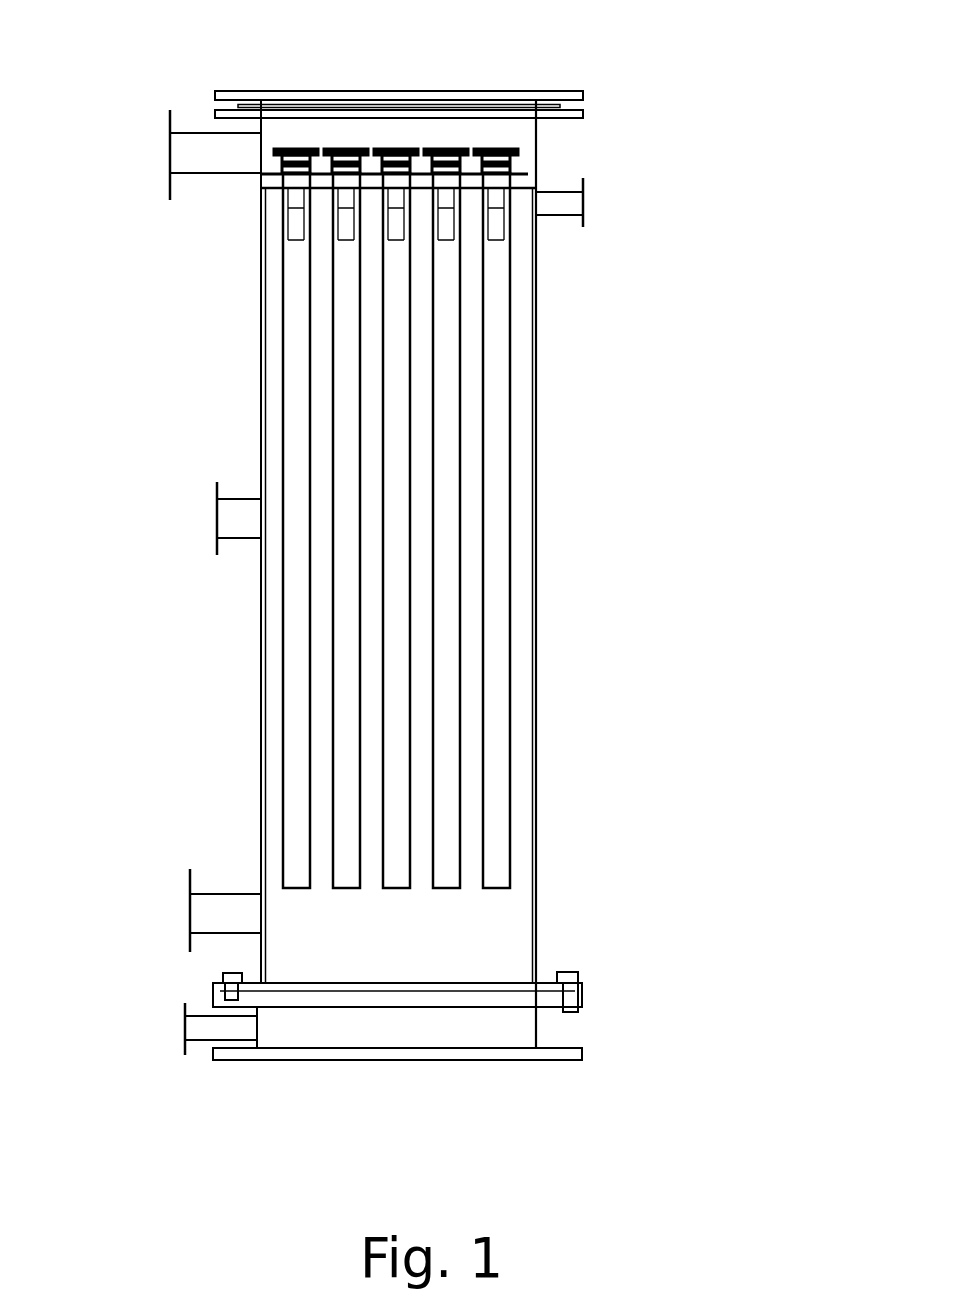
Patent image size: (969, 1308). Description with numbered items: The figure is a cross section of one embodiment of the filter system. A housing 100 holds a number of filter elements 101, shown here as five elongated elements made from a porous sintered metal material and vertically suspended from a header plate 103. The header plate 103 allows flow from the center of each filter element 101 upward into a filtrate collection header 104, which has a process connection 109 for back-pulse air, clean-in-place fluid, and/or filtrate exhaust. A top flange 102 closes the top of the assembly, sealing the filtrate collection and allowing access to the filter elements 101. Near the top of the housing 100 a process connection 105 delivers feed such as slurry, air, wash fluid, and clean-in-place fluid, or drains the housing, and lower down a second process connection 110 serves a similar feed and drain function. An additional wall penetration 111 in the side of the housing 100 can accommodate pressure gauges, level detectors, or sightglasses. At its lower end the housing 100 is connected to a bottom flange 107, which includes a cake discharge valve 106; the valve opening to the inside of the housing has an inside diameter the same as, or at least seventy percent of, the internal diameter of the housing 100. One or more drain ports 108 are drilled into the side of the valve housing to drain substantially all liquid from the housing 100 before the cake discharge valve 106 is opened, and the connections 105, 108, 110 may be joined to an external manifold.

The housing 100 is at (447, 574).
The filter element 101 is at (464, 530).
The top flange 102 is at (399, 59).
The header plate 103 is at (449, 237).
The filtrate collection header 104 is at (458, 86).
The process connection 105 is at (630, 220).
The cake discharge valve 106 is at (430, 1098).
The bottom flange 107 is at (427, 943).
The drain port 108 is at (162, 998).
The process connection 109 is at (163, 129).
The process connection 110 is at (172, 884).
The wall penetration 111 is at (186, 487).